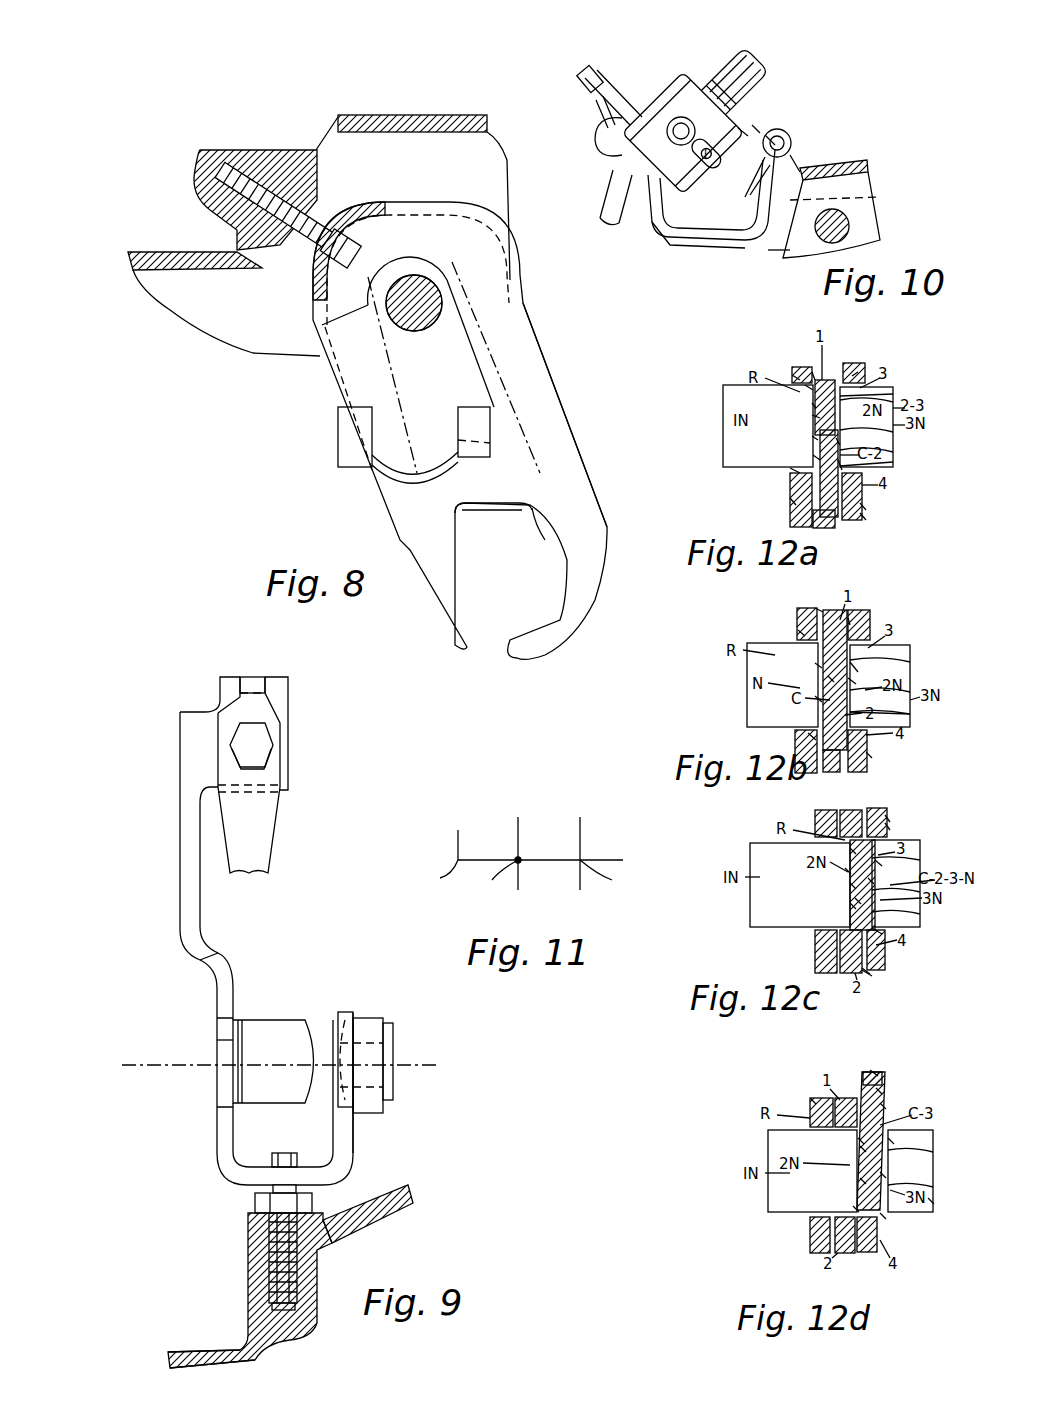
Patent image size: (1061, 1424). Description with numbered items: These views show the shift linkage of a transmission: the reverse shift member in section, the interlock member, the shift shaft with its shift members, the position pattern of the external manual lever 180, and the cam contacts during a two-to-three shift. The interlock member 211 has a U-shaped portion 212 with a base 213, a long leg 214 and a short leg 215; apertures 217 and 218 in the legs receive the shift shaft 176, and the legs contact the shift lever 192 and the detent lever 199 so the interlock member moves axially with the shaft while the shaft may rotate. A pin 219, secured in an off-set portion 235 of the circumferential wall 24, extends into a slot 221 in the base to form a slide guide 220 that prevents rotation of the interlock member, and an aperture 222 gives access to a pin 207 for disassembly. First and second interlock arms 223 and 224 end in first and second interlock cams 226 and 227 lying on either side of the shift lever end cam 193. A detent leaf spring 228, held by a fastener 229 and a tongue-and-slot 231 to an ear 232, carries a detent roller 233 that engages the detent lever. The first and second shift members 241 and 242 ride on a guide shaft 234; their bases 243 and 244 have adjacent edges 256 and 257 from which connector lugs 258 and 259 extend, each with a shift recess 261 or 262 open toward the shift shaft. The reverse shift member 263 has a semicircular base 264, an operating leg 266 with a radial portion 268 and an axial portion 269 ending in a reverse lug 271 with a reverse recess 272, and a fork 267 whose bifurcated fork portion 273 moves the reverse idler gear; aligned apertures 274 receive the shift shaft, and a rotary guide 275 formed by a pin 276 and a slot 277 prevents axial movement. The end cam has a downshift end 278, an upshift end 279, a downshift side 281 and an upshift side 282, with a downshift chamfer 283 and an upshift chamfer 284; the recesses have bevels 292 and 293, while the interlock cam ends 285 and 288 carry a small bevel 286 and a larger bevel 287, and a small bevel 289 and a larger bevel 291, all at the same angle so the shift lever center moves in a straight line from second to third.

In FIG. 8, the circumferential wall 24 is at (386, 122).
In FIG. 9, the circumferential wall 24 is at (405, 1200).
In FIG. 8, the shift shaft 176 is at (428, 323).
In FIG. 10, the shift shaft 176 is at (745, 65).
In FIG. 11, the external manual lever 180 is at (519, 858).
In FIG. 10, the shift lever 192 is at (758, 128).
In FIG. 12A, the shift lever 192 is at (790, 470).
In FIG. 12A, the shift lever end cam 193 is at (838, 440).
In FIG. 12B, the shift lever end cam 193 is at (862, 680).
In FIG. 12C, the shift lever end cam 193 is at (870, 880).
In FIG. 12D, the shift lever end cam 193 is at (885, 1105).
In FIG. 10, the detent lever 199 is at (612, 96).
In FIG. 10, the pin 207 is at (600, 188).
In FIG. 10, the interlock member 211 is at (583, 126).
In FIG. 9, the interlock member 211 is at (178, 856).
In FIG. 10, the U-shaped portion 212 is at (605, 165).
In FIG. 9, the U-shaped portion 212 is at (212, 1131).
In FIG. 10, the base 213 is at (655, 100).
In FIG. 9, the base 213 is at (256, 1185).
In FIG. 9, the long leg 214 is at (212, 962).
In FIG. 9, the short leg 215 is at (358, 1137).
In FIG. 9, the aperture 217 is at (213, 1040).
In FIG. 9, the aperture 218 is at (380, 1040).
In FIG. 10, the pin 219 is at (742, 125).
In FIG. 9, the pin 219 is at (275, 1243).
In FIG. 9, the slide guide 220 is at (300, 1247).
In FIG. 10, the slot 221 is at (655, 205).
In FIG. 9, the slot 221 is at (258, 1162).
In FIG. 10, the aperture 222 is at (683, 122).
In FIG. 10, the first interlock arm 223 is at (672, 222).
In FIG. 9, the first interlock arm 223 is at (217, 1048).
In FIG. 10, the second interlock arm 224 is at (770, 140).
In FIG. 9, the second interlock arm 224 is at (385, 1082).
In FIG. 12A, the first interlock cam 226 is at (893, 392).
In FIG. 12B, the first interlock cam 226 is at (910, 650).
In FIG. 12C, the first interlock cam 226 is at (918, 910).
In FIG. 12D, the first interlock cam 226 is at (918, 1160).
In FIG. 9, the first interlock cam 226 is at (345, 1018).
In FIG. 10, the second interlock cam 227 is at (708, 212).
In FIG. 12A, the second interlock cam 227 is at (724, 392).
In FIG. 12B, the second interlock cam 227 is at (750, 682).
In FIG. 12C, the second interlock cam 227 is at (752, 918).
In FIG. 12D, the second interlock cam 227 is at (770, 1195).
In FIG. 9, the second interlock cam 227 is at (283, 1040).
In FIG. 9, the detent leaf spring 228 is at (245, 862).
In FIG. 9, the fastener 229 is at (238, 745).
In FIG. 9, the tongue-and-slot 231 is at (250, 682).
In FIG. 9, the ear 232 is at (289, 773).
In FIG. 10, the detent roller 233 is at (596, 88).
In FIG. 10, the guide shaft 234 is at (850, 228).
In FIG. 9, the off-set portion 235 is at (302, 1328).
In FIG. 10, the first shift member 241 is at (760, 262).
In FIG. 12A, the first shift member 241 is at (836, 378).
In FIG. 12B, the first shift member 241 is at (848, 618).
In FIG. 12C, the first shift member 241 is at (877, 810).
In FIG. 12D, the first shift member 241 is at (871, 1141).
In FIG. 10, the second shift member 242 is at (882, 172).
In FIG. 12A, the second shift member 242 is at (862, 361).
In FIG. 12B, the second shift member 242 is at (873, 630).
In FIG. 12C, the second shift member 242 is at (893, 835).
In FIG. 12D, the second shift member 242 is at (885, 1076).
In FIG. 10, the base 243 is at (752, 245).
In FIG. 10, the base 244 is at (870, 168).
In FIG. 12D, the base 244 is at (847, 1096).
In FIG. 10, the adjacent edge 256 is at (872, 203).
In FIG. 10, the adjacent edge 257 is at (795, 168).
In FIG. 10, the first connector lug 258 is at (792, 155).
In FIG. 12A, the first connector lug 258 is at (815, 378).
In FIG. 10, the second connector lug 259 is at (780, 148).
In FIG. 12A, the second connector lug 259 is at (860, 372).
In FIG. 12B, the second connector lug 259 is at (873, 619).
In FIG. 12C, the second connector lug 259 is at (890, 825).
In FIG. 12D, the second connector lug 259 is at (875, 1072).
In FIG. 12A, the first shift recess 261 is at (862, 515).
In FIG. 12B, the first shift recess 261 is at (840, 760).
In FIG. 12C, the first shift recess 261 is at (868, 972).
In FIG. 12D, the first shift recess 261 is at (865, 1253).
In FIG. 12A, the second shift recess 262 is at (862, 490).
In FIG. 12B, the second shift recess 262 is at (868, 745).
In FIG. 12C, the second shift recess 262 is at (885, 950).
In FIG. 12D, the second shift recess 262 is at (880, 1225).
In FIG. 8, the reverse shift member 263 is at (527, 292).
In FIG. 12A, the reverse shift member 263 is at (794, 365).
In FIG. 12B, the reverse shift member 263 is at (795, 618).
In FIG. 12C, the reverse shift member 263 is at (813, 820).
In FIG. 12D, the reverse shift member 263 is at (820, 1096).
In FIG. 8, the base 264 is at (381, 215).
In FIG. 8, the operating leg 266 is at (520, 339).
In FIG. 8, the fork 267 is at (582, 449).
In FIG. 8, the radial portion 268 is at (483, 383).
In FIG. 10, the radial portion 268 is at (683, 240).
In FIG. 8, the axial portion 269 is at (445, 464).
In FIG. 10, the axial portion 269 is at (778, 258).
In FIG. 8, the reverse lug 271 is at (338, 412).
In FIG. 12A, the reverse lug 271 is at (792, 372).
In FIG. 12B, the reverse lug 271 is at (800, 632).
In FIG. 12C, the reverse lug 271 is at (842, 810).
In FIG. 12D, the reverse lug 271 is at (812, 1100).
In FIG. 8, the reverse recess 272 is at (372, 432).
In FIG. 12A, the reverse recess 272 is at (800, 490).
In FIG. 12B, the reverse recess 272 is at (795, 722).
In FIG. 12C, the reverse recess 272 is at (815, 940).
In FIG. 12D, the reverse recess 272 is at (812, 1235).
In FIG. 8, the bifurcated fork portion 273 is at (508, 642).
In FIG. 8, the apertures 274 is at (399, 328).
In FIG. 8, the rotary guide 275 is at (300, 279).
In FIG. 8, the pin 276 is at (362, 262).
In FIG. 8, the slot 277 is at (365, 218).
In FIG. 12A, the downshift end 278 is at (812, 405).
In FIG. 12A, the upshift end 279 is at (835, 522).
In FIG. 12A, the downshift side 281 is at (813, 457).
In FIG. 12B, the downshift side 281 is at (830, 678).
In FIG. 12C, the downshift side 281 is at (850, 905).
In FIG. 12D, the downshift side 281 is at (862, 1148).
In FIG. 12A, the upshift side 282 is at (860, 463).
In FIG. 12B, the upshift side 282 is at (815, 698).
In FIG. 12C, the upshift side 282 is at (850, 885).
In FIG. 12A, the downshift chamfer 283 is at (815, 437).
In FIG. 12B, the downshift chamfer 283 is at (815, 610).
In FIG. 12C, the downshift chamfer 283 is at (850, 850).
In FIG. 12D, the downshift chamfer 283 is at (880, 1090).
In FIG. 12A, the upshift chamfer 284 is at (862, 505).
In FIG. 12B, the upshift chamfer 284 is at (870, 755).
In FIG. 12C, the upshift chamfer 284 is at (855, 900).
In FIG. 12D, the upshift chamfer 284 is at (885, 1175).
In FIG. 12D, the end 285 is at (933, 1200).
In FIG. 12A, the small bevel 286 is at (890, 395).
In FIG. 12B, the small bevel 286 is at (855, 668).
In FIG. 12C, the small bevel 286 is at (880, 862).
In FIG. 12D, the small bevel 286 is at (890, 1140).
In FIG. 12A, the larger bevel 287 is at (893, 444).
In FIG. 12B, the larger bevel 287 is at (910, 710).
In FIG. 12C, the larger bevel 287 is at (880, 930).
In FIG. 12D, the larger bevel 287 is at (885, 1215).
In FIG. 12A, the end 288 is at (815, 415).
In FIG. 12D, the end 288 is at (862, 1180).
In FIG. 12A, the small bevel 289 is at (792, 500).
In FIG. 12B, the small bevel 289 is at (810, 735).
In FIG. 12C, the small bevel 289 is at (820, 950).
In FIG. 12D, the small bevel 289 is at (855, 1208).
In FIG. 12A, the larger bevel 291 is at (805, 385).
In FIG. 12B, the larger bevel 291 is at (815, 665).
In FIG. 12C, the larger bevel 291 is at (845, 870).
In FIG. 12D, the larger bevel 291 is at (860, 1140).
In FIG. 12C, the bevel 292 is at (890, 818).
In FIG. 12C, the bevel 293 is at (868, 973).